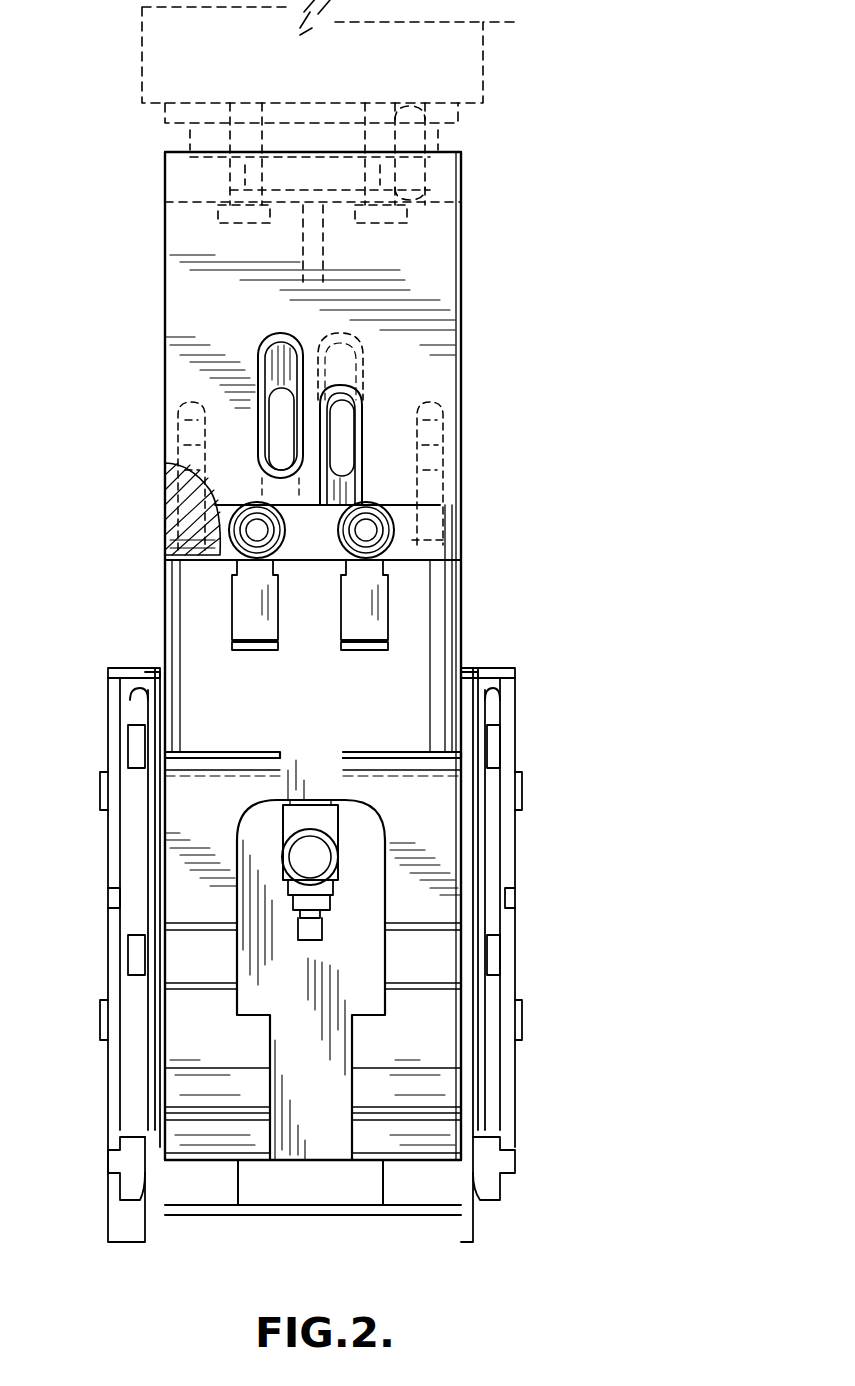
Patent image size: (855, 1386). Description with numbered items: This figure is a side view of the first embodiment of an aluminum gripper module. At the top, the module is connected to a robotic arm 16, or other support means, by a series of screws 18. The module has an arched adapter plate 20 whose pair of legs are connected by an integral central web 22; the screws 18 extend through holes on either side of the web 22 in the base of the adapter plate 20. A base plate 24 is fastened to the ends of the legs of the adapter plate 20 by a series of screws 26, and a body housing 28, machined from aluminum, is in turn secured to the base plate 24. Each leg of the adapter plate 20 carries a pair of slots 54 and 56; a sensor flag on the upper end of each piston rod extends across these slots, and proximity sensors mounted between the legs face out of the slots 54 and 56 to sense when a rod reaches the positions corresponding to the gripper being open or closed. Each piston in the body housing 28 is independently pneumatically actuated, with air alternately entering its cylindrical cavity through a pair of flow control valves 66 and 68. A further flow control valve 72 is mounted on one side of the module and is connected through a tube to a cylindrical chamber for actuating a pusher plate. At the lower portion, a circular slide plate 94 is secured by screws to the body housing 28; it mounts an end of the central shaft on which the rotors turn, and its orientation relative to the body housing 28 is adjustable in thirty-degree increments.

The robotic arm 16 is at (480, 52).
The screws 18 is at (232, 212).
The arched adapter plate 20 is at (432, 272).
The central web 22 is at (320, 272).
The base plate 24 is at (452, 522).
The screws 26 is at (180, 572).
The body housing 28 is at (430, 652).
The slot 54 is at (260, 375).
The slot 56 is at (366, 392).
The flow control valve 66 is at (385, 515).
The flow control valve 68 is at (318, 860).
The flow control valve 72 is at (257, 530).
The circular slide plate 94 is at (130, 1157).